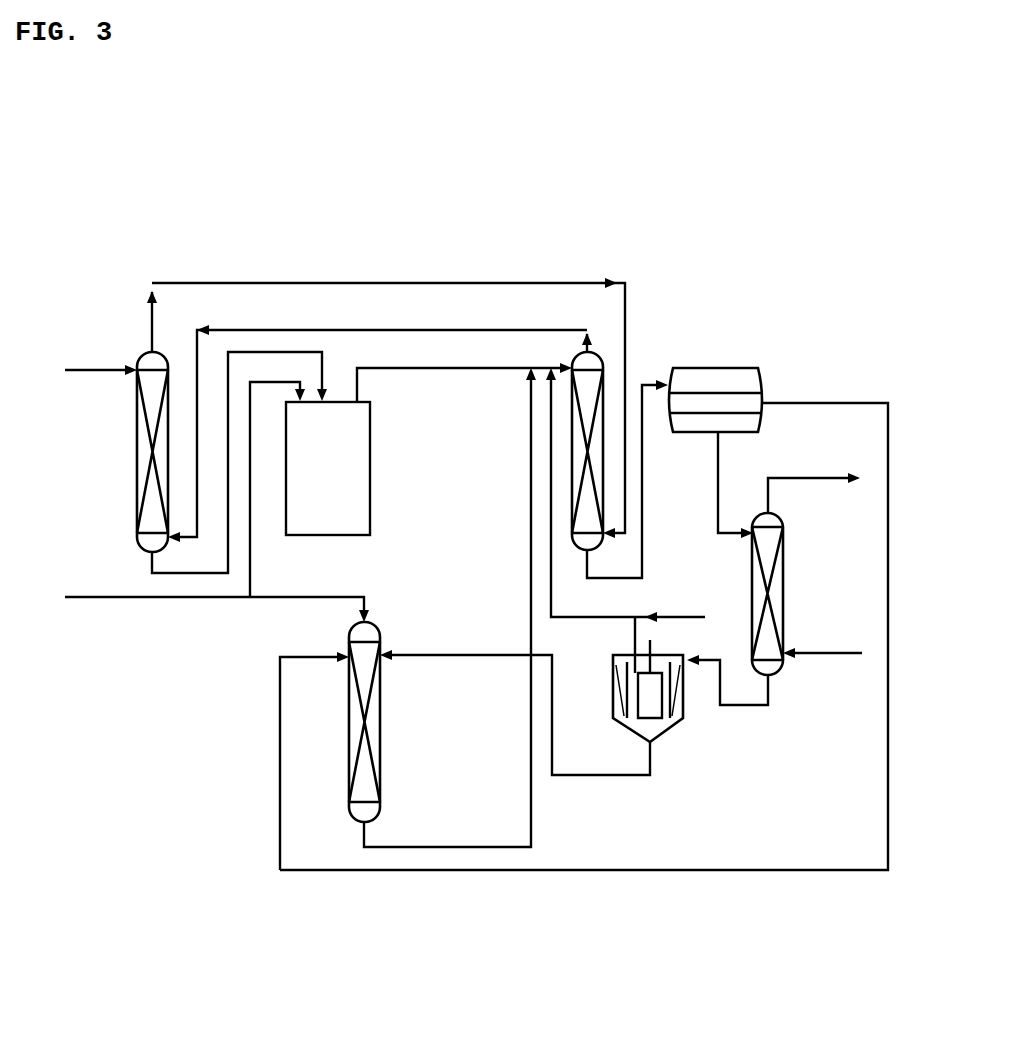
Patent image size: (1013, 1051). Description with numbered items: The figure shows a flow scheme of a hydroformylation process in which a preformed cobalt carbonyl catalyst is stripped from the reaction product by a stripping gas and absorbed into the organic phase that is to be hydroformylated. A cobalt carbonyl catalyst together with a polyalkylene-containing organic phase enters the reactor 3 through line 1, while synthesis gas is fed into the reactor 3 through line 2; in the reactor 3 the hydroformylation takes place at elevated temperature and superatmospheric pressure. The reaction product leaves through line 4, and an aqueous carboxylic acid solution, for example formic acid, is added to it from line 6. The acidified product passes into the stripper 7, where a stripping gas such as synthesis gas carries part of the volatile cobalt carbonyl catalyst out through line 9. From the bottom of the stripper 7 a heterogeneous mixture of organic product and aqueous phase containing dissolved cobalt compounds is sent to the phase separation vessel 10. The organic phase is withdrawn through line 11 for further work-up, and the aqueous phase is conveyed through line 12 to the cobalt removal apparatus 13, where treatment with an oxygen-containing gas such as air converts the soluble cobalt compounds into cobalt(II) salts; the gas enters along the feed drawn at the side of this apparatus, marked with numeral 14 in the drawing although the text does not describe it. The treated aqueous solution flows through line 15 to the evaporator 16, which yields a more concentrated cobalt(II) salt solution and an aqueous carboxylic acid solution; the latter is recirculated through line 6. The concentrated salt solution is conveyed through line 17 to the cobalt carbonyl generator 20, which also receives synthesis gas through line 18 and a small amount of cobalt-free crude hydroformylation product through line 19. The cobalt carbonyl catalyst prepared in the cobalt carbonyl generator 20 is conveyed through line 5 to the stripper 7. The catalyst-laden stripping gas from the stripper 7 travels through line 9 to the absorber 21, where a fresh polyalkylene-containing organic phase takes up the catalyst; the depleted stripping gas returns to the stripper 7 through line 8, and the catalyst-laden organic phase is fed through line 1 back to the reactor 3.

The line 1 is at (297, 348).
The line 2 is at (256, 384).
The reactor 3 is at (342, 478).
The line 4 is at (393, 370).
The line 5 is at (530, 422).
The line 6 is at (550, 460).
The stripper 7 is at (580, 523).
The line 8 is at (627, 310).
The line 9 is at (440, 328).
The phase separation vessel 10 is at (715, 363).
The line 11 is at (825, 402).
The line 12 is at (757, 461).
The cobalt removal apparatus 13 is at (768, 593).
The feed line 14 is at (820, 652).
The line 15 is at (752, 708).
The evaporator 16 is at (657, 728).
The line 17 is at (467, 652).
The line 18 is at (282, 593).
The line 19 is at (280, 722).
The cobalt carbonyl generator 20 is at (372, 732).
The absorber 21 is at (142, 452).